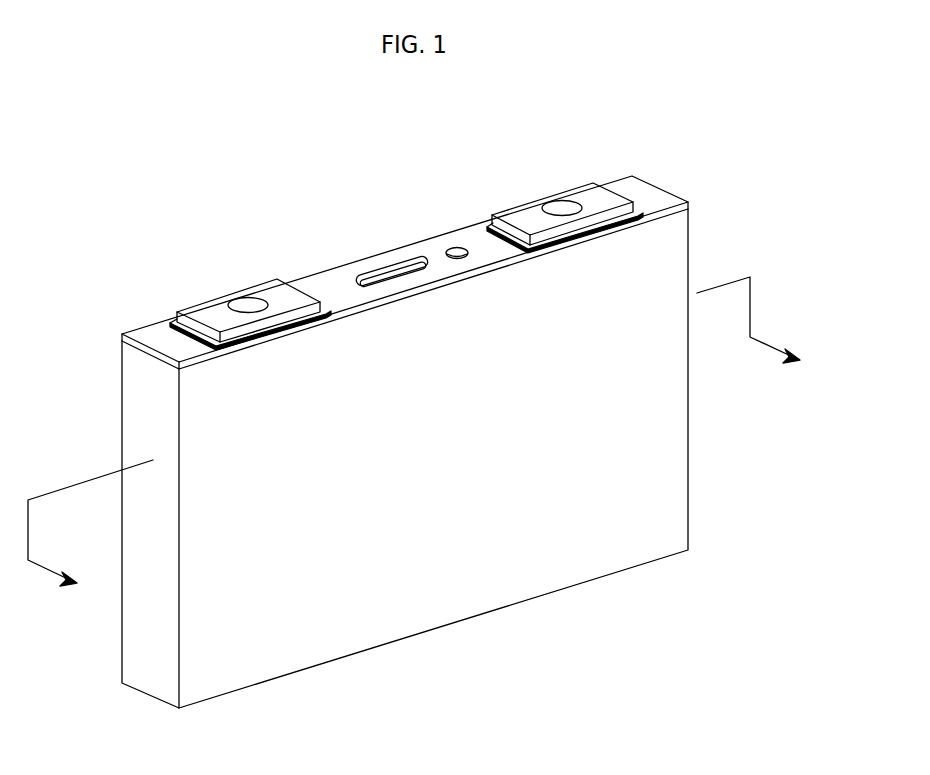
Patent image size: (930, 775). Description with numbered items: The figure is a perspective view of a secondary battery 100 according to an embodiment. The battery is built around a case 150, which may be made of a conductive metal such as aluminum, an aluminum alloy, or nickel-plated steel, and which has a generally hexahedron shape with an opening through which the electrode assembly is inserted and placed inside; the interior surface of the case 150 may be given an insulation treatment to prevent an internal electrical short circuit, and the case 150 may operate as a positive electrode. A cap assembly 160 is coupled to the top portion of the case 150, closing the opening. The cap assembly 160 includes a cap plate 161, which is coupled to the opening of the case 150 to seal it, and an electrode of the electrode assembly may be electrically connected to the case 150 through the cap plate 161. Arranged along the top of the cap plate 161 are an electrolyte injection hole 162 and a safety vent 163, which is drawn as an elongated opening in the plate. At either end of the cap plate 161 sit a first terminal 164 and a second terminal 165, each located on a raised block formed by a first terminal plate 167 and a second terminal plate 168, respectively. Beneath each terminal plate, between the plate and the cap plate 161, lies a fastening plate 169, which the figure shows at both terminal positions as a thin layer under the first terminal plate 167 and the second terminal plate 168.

The secondary battery 100 is at (88, 114).
The case 150 is at (682, 423).
The cap assembly 160 is at (440, 193).
The cap plate 161 is at (328, 277).
The electrolyte injection hole 162 is at (450, 248).
The safety vent 163 is at (370, 270).
The first terminal 164 is at (557, 207).
The second terminal 165 is at (247, 302).
The first terminal plate 167 is at (607, 195).
The second terminal plate 168 is at (200, 308).
The fastening plate 169 is at (172, 322).